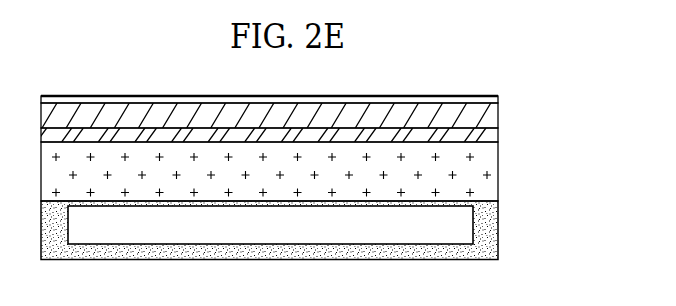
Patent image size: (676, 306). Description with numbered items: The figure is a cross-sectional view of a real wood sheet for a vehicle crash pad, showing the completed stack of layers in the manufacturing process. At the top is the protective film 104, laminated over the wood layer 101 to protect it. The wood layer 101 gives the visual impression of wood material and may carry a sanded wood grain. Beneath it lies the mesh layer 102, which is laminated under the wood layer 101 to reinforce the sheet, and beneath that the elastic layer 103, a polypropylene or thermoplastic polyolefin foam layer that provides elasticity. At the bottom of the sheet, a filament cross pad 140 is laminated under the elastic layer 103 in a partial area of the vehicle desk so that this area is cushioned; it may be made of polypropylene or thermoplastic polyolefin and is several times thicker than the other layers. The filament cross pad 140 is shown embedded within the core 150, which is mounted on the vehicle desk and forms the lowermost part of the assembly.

The protective film 104 is at (498, 99).
The wood layer 101 is at (499, 113).
The mesh layer 102 is at (499, 137).
The elastic layer 103 is at (499, 170).
The filament cross pad 140 is at (473, 223).
The core 150 is at (499, 230).